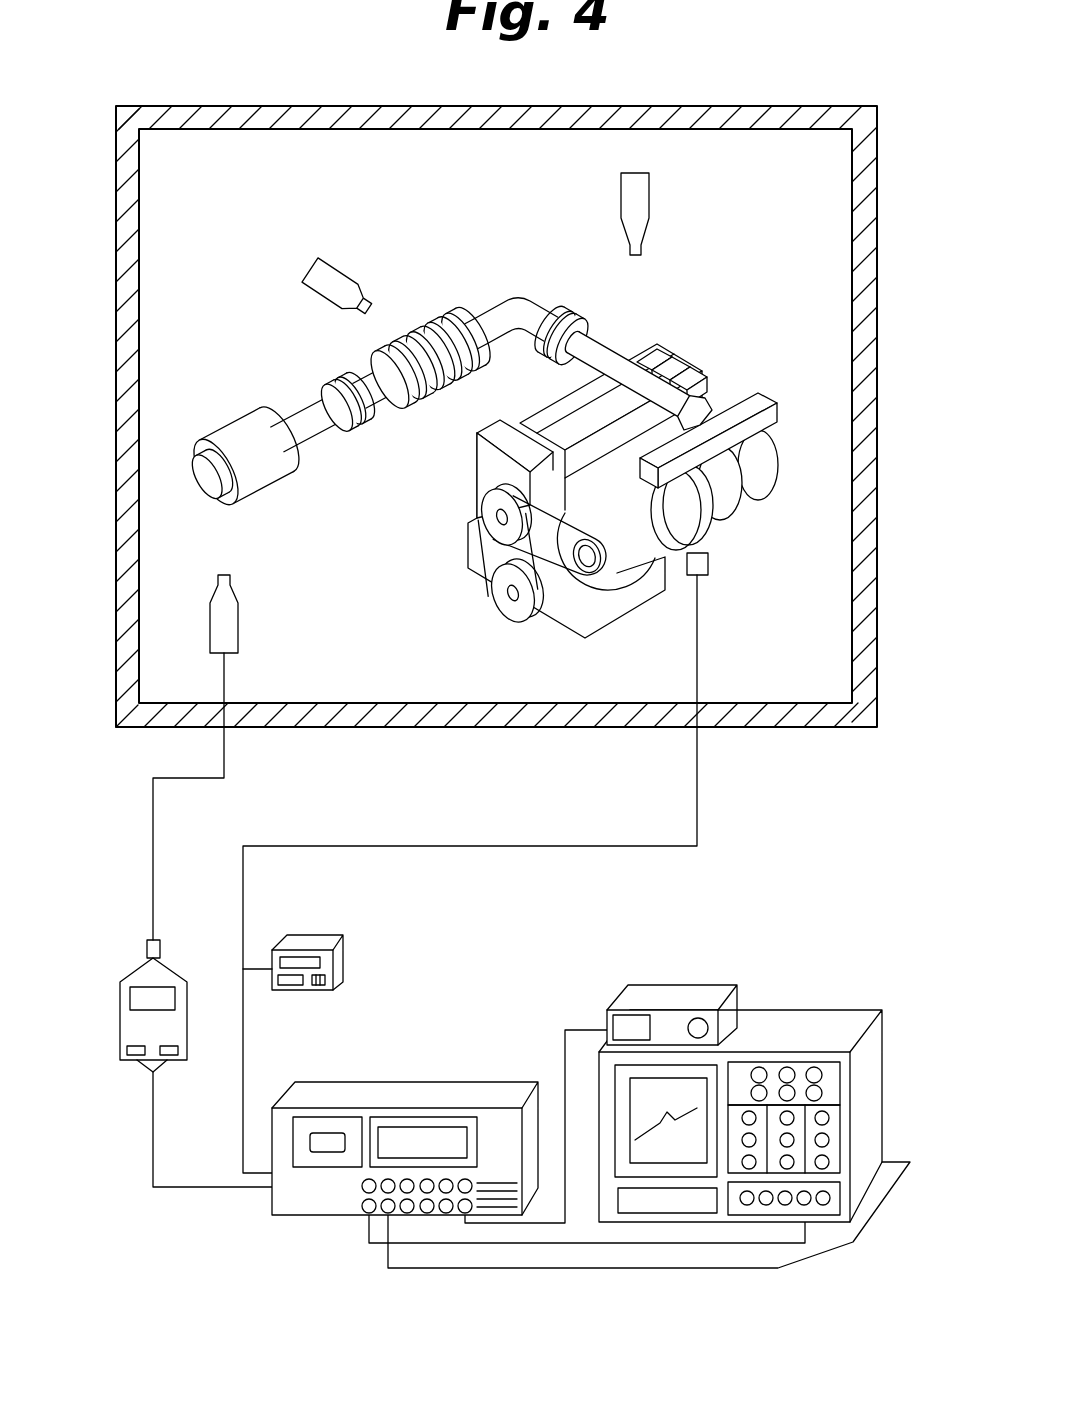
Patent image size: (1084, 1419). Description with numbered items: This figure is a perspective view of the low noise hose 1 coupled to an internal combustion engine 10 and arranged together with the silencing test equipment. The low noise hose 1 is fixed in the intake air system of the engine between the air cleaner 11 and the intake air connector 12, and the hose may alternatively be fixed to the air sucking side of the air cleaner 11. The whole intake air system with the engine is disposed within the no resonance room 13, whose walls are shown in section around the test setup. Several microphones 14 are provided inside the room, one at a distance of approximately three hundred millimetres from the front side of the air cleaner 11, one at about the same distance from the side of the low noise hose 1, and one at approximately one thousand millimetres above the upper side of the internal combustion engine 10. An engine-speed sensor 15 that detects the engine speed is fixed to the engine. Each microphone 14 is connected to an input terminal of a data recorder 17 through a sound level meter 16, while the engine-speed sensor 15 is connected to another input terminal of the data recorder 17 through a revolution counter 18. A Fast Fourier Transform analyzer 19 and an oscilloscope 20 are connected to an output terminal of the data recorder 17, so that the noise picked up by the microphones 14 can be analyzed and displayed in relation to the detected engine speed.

The low noise hose 1 is at (438, 366).
The internal combustion engine 10 is at (477, 455).
The air cleaner 11 is at (240, 425).
The intake air connector 12 is at (607, 350).
The no resonance room 13 is at (466, 728).
The microphone 14 is at (337, 277).
The engine-speed sensor 15 is at (710, 565).
The sound level meter 16 is at (127, 1022).
The data recorder 17 is at (316, 1216).
The revolution counter 18 is at (330, 965).
The FFT analyzer 19 is at (833, 1128).
The oscilloscope 20 is at (667, 1010).